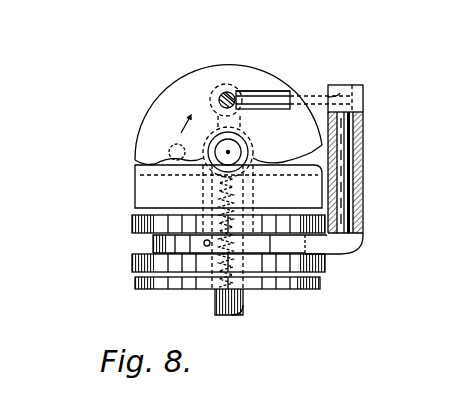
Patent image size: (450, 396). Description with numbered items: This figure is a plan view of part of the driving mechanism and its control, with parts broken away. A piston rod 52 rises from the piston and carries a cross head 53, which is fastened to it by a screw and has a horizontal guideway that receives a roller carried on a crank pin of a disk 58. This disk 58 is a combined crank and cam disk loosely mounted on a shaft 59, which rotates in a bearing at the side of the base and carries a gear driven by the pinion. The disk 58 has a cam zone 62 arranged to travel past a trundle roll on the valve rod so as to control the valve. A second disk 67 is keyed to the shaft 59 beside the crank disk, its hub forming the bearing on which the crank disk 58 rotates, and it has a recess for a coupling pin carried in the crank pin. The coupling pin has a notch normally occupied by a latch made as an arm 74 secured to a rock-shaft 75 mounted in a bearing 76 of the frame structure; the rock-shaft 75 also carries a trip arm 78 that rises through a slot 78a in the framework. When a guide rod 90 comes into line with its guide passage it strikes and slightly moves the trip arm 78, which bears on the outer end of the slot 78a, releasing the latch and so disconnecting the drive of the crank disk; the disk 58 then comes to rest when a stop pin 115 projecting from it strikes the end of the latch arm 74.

The piston rod 52 is at (240, 146).
The cross head 53 is at (148, 193).
The disk 58 is at (170, 240).
The shaft 59 is at (244, 305).
The cam zone 62 is at (143, 260).
The disk 67 is at (140, 288).
The arm 74 is at (306, 242).
The rock-shaft 75 is at (342, 185).
The bearing 76 is at (364, 137).
The arm 78 is at (268, 100).
The slot 78a is at (257, 93).
The guide rod 90 is at (229, 94).
The stop pin 115 is at (205, 246).